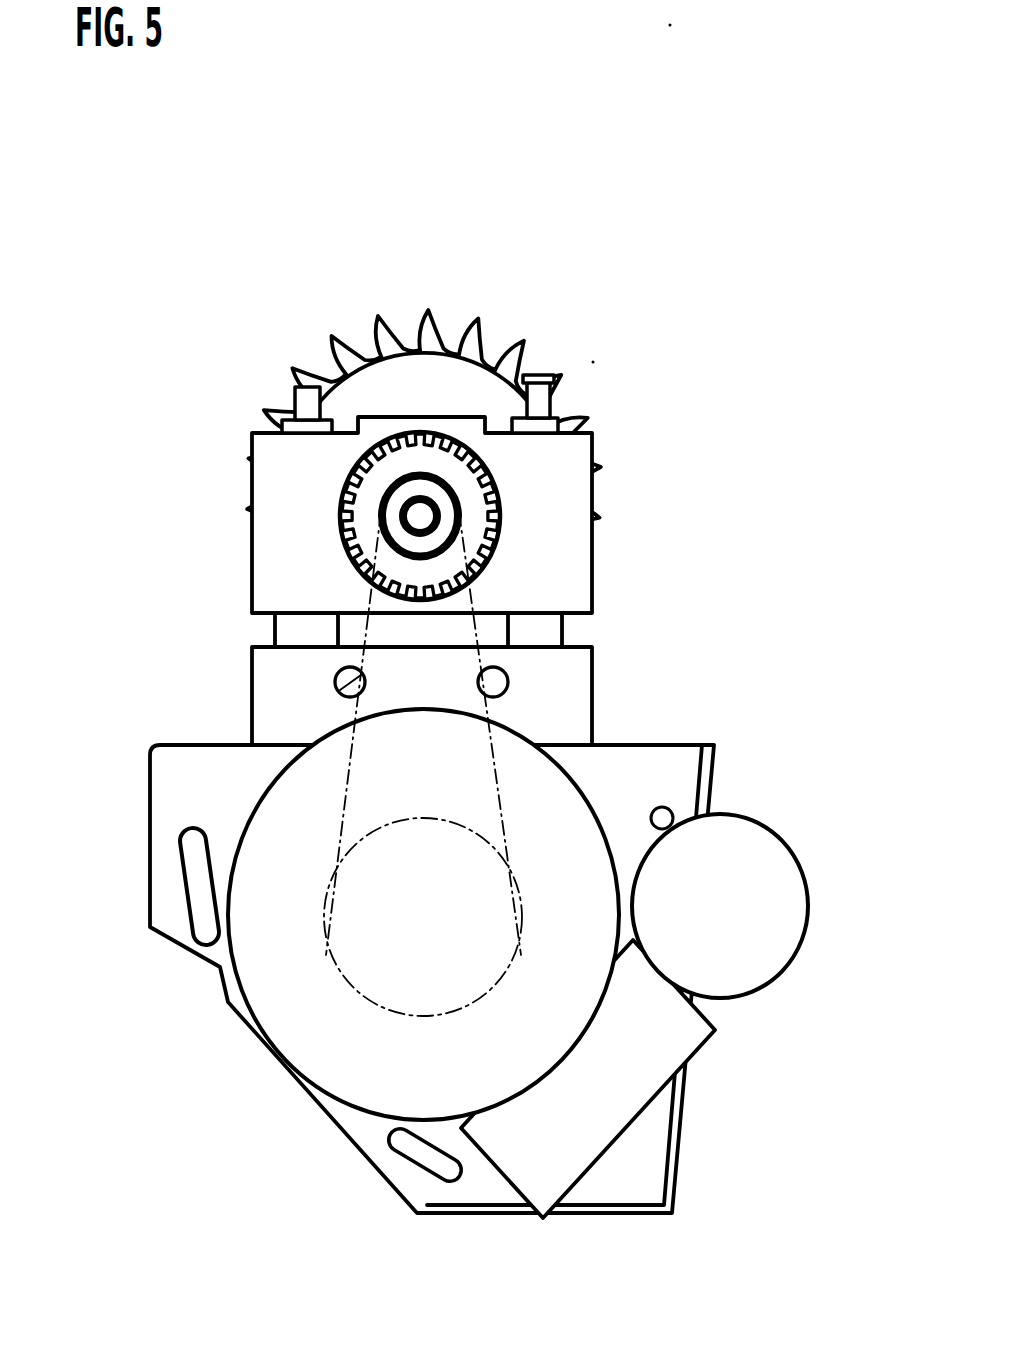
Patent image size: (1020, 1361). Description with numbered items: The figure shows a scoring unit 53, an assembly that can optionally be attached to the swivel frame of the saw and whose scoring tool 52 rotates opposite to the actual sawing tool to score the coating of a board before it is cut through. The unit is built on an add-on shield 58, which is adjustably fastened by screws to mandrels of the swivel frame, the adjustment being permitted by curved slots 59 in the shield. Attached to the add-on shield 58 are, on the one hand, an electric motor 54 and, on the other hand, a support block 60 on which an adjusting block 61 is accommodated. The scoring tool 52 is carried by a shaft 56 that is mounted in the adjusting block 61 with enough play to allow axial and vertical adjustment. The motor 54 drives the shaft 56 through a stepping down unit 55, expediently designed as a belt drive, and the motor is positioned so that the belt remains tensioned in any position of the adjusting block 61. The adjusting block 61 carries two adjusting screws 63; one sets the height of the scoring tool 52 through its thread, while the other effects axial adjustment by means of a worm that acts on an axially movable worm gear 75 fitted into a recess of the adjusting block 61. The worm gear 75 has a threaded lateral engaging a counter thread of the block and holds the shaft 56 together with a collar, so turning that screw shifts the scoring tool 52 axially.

The scoring tool 52 is at (412, 338).
The scoring unit 53 is at (428, 715).
The electric motor 54 is at (305, 805).
The stepping down unit 55 is at (505, 800).
The shaft 56 is at (425, 518).
The add-on shield 58 is at (355, 1120).
The curved slots 59 is at (197, 880).
The support block 60 is at (565, 672).
The adjusting block 61 is at (555, 548).
The adjusting screws 63 is at (550, 397).
The worm gear 75 is at (345, 503).